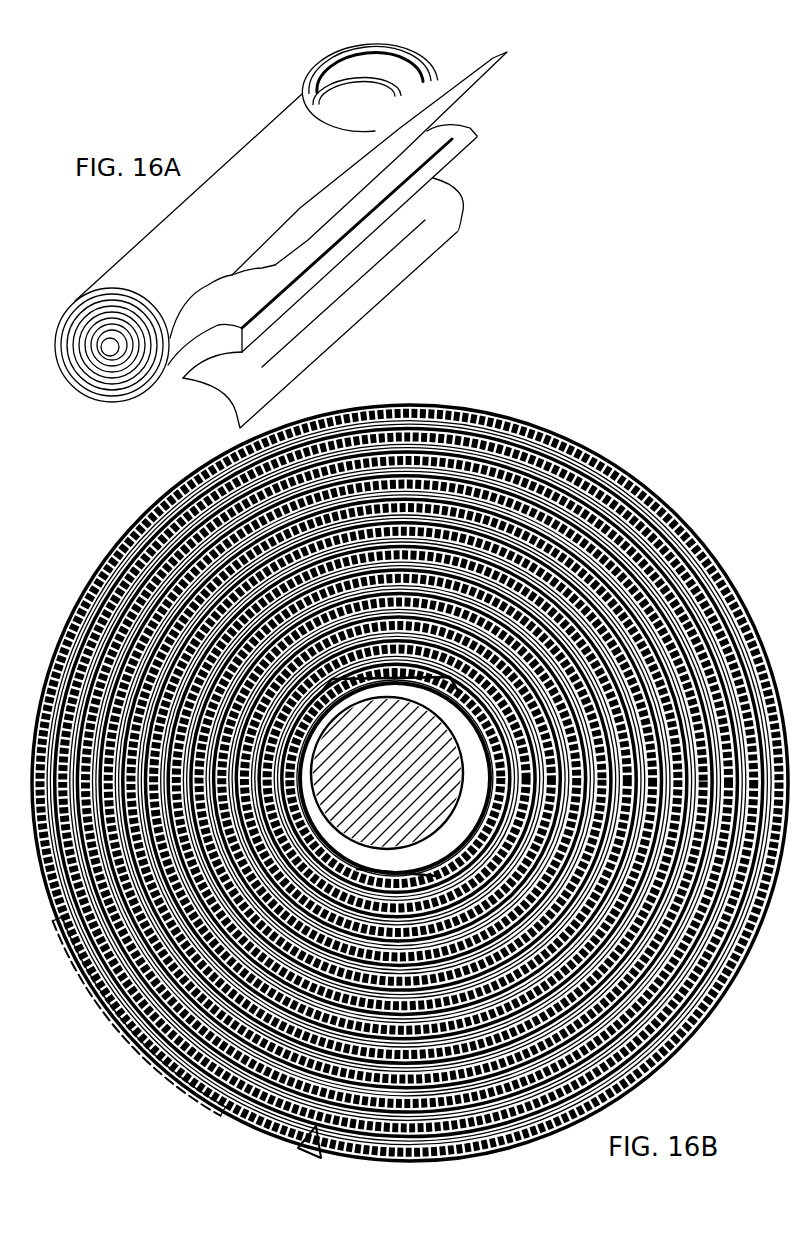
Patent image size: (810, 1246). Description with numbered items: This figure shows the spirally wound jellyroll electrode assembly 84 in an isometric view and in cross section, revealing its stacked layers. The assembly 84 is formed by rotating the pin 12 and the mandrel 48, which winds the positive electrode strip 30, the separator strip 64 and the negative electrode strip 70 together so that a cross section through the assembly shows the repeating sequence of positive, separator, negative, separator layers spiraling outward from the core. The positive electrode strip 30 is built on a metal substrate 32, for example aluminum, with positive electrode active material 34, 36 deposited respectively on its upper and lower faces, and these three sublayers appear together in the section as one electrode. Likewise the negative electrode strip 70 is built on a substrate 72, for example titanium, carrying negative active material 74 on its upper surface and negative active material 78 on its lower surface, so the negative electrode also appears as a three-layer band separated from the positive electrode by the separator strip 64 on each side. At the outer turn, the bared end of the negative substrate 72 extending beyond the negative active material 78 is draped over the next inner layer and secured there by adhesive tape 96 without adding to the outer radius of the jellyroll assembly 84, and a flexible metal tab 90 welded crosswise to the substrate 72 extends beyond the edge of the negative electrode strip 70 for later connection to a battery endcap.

In FIG. 16B, the pin 12 is at (640, 476).
In FIG. 16A, the positive electrode strip 30 is at (452, 135).
In FIG. 16B, the positive electrode strip 30 is at (708, 353).
In FIG. 16B, the metal substrate 32 is at (616, 462).
In FIG. 16B, the positive electrode active material 34 is at (624, 468).
In FIG. 16B, the positive electrode active material 36 is at (606, 455).
In FIG. 16A, the mandrel 48 is at (66, 356).
In FIG. 16B, the mandrel 48 is at (665, 499).
In FIG. 16A, the separator strip 64 is at (495, 53).
In FIG. 16B, the separator strip 64 is at (598, 430).
In FIG. 16A, the negative electrode strip 70 is at (462, 210).
In FIG. 16B, the negative electrode strip 70 is at (720, 225).
In FIG. 16B, the substrate 72 is at (570, 432).
In FIG. 16B, the negative active material 74 is at (584, 440).
In FIG. 16B, the negative active material 78 is at (520, 415).
In FIG. 16A, the spiral jellyroll assembly 84 is at (84, 397).
In FIG. 16B, the flexible metal tab 90 is at (247, 1113).
In FIG. 16B, the adhesive tape 96 is at (102, 1005).